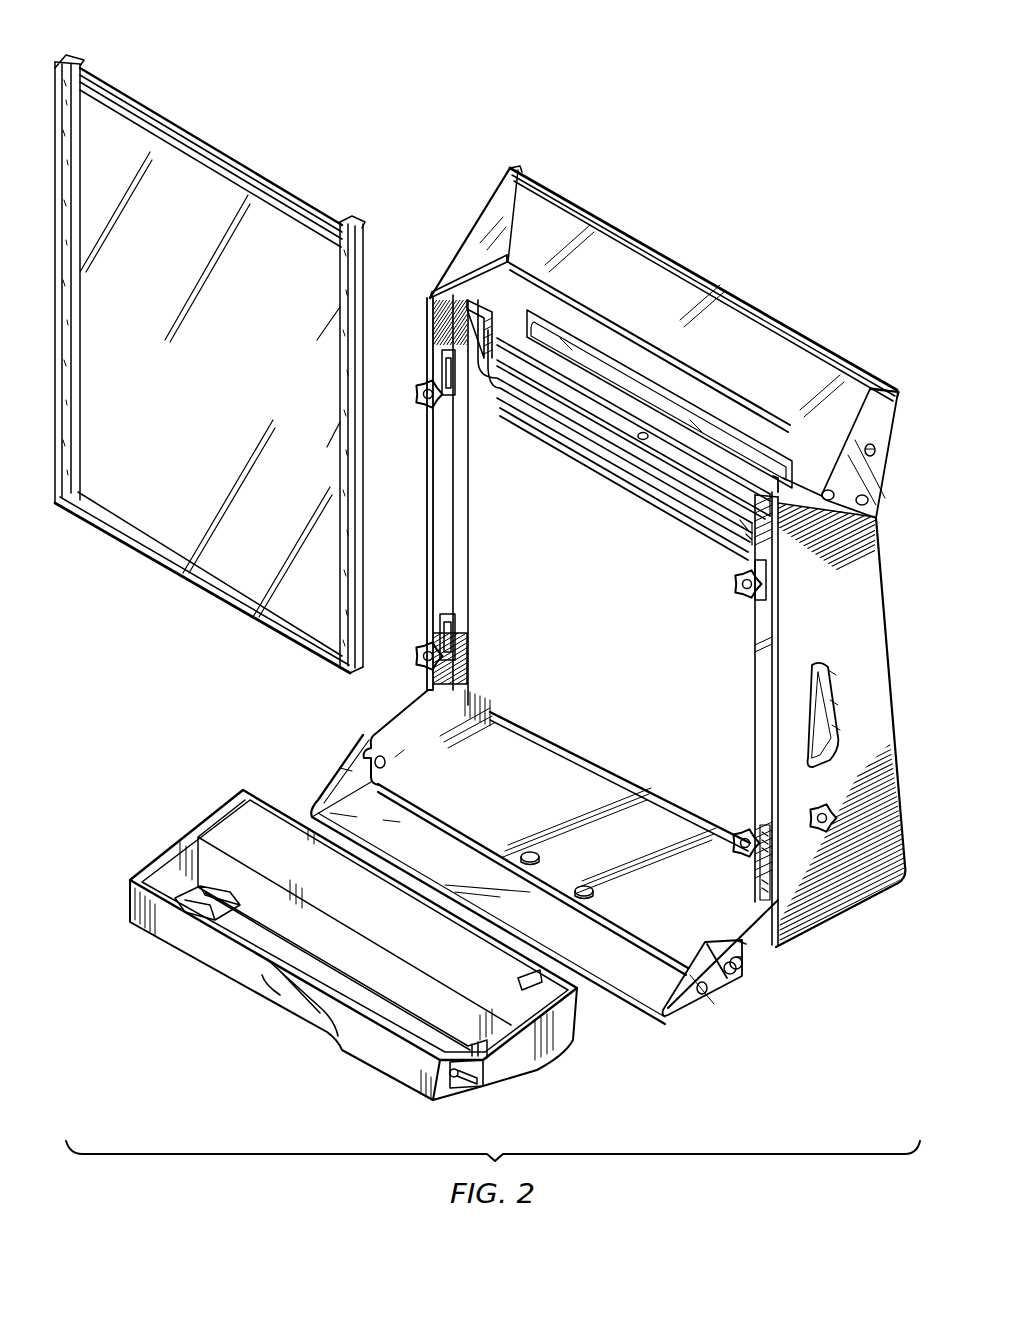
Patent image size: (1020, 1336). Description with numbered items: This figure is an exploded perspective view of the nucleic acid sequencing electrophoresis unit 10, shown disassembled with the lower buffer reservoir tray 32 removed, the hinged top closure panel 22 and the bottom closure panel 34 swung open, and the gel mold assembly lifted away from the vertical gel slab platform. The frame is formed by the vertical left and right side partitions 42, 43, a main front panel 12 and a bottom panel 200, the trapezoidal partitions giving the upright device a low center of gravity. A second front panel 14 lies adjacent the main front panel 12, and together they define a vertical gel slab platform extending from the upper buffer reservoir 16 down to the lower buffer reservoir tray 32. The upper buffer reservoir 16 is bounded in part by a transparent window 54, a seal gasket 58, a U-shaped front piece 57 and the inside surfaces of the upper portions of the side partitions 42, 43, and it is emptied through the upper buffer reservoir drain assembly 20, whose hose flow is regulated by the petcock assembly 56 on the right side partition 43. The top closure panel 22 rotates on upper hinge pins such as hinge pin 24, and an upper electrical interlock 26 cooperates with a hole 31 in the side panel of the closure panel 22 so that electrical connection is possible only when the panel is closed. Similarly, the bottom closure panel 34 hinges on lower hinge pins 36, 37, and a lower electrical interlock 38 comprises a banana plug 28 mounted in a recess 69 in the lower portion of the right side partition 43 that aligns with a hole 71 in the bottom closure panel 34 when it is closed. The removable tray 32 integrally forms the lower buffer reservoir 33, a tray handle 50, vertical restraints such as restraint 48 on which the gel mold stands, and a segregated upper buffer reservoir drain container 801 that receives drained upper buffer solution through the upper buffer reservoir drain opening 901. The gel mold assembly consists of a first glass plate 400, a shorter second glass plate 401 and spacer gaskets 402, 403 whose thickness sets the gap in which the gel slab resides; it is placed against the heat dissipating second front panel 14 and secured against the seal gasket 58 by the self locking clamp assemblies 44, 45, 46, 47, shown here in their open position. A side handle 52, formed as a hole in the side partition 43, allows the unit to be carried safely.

The electrophoresis unit 10 is at (422, 296).
The main front panel 12 is at (443, 490).
The second front panel 14 is at (605, 594).
The upper buffer reservoir 16 is at (540, 373).
The upper buffer reservoir drain assembly 20 is at (636, 437).
The hinged top closure panel 22 is at (644, 302).
The upper hinge pin 24 is at (860, 510).
The upper electrical interlock 26 is at (818, 470).
The banana plug 28 is at (472, 1084).
The hole 31 is at (870, 440).
The lower buffer reservoir tray 32 is at (130, 923).
The lower buffer reservoir 33 is at (409, 999).
The bottom closure panel 34 is at (653, 989).
The lower hinge pin 36 is at (385, 768).
The lower hinge pin 37 is at (738, 976).
The lower electrical interlock 38 is at (752, 950).
The left side partition 42 is at (425, 600).
The right side partition 43 is at (841, 631).
The self locking clamp assembly 44 is at (428, 380).
The self locking clamp assembly 45 is at (410, 664).
The self locking clamp assembly 46 is at (767, 575).
The self locking clamp assembly 47 is at (763, 846).
The vertical restraint 48 is at (222, 913).
The lower buffer reservoir tray handle 50 is at (270, 990).
The side handle 52 is at (838, 723).
The transparent window 54 is at (620, 366).
The petcock assembly 56 is at (837, 805).
The U-shaped front piece 57 is at (500, 303).
The seal gasket 58 is at (645, 480).
The recess 69 is at (741, 938).
The hole 71 is at (707, 1000).
The bottom panel 200 is at (542, 806).
The first glass plate 400 is at (114, 538).
The second glass plate 401 is at (362, 275).
The spacer gasket 402 is at (80, 64).
The spacer gasket 403 is at (352, 228).
The upper buffer reservoir drain container 801 is at (278, 864).
The upper buffer reservoir drain opening 901 is at (525, 982).